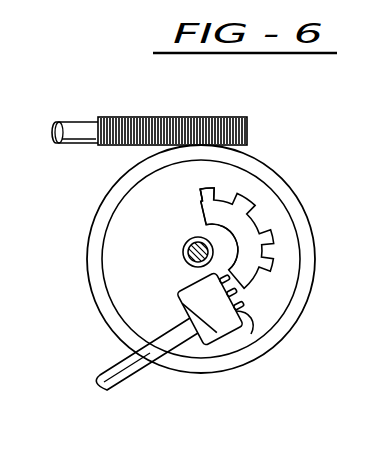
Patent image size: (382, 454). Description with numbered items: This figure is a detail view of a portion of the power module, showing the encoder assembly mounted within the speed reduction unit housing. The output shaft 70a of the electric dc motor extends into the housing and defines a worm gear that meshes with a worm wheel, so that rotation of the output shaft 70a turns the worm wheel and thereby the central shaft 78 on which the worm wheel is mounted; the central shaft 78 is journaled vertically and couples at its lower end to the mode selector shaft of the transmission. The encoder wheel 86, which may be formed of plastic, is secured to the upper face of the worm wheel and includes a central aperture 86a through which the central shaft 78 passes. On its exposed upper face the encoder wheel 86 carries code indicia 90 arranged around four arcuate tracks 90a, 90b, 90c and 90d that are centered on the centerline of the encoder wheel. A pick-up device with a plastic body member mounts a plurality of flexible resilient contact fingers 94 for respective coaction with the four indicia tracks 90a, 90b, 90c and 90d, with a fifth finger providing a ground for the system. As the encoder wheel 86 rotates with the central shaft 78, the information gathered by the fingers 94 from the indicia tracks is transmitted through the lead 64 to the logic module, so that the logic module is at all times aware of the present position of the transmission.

The output shaft 70a is at (80, 133).
The code indicia 90 is at (263, 192).
The arcuate track 90a is at (189, 187).
The arcuate track 90b is at (192, 186).
The arcuate track 90c is at (203, 203).
The arcuate track 90d is at (229, 232).
The central shaft 78 is at (185, 250).
The central aperture 86a is at (185, 262).
The encoder wheel 86 is at (160, 315).
The lead 64 is at (129, 373).
The contact fingers 94 is at (252, 340).